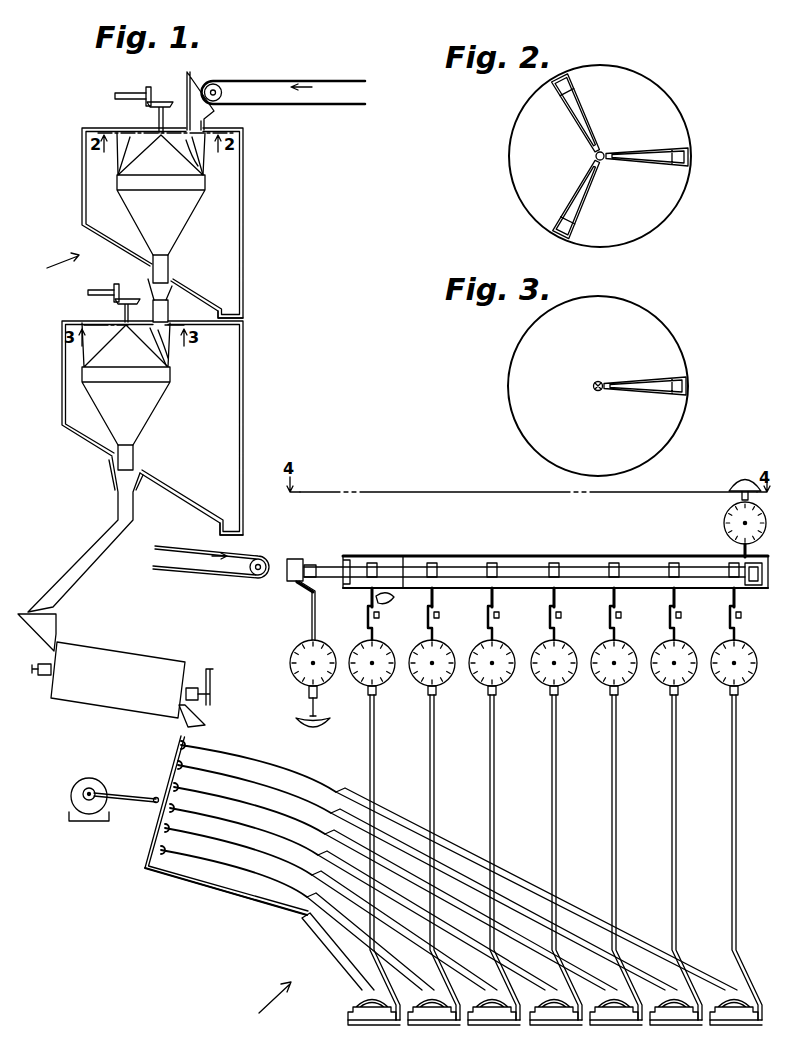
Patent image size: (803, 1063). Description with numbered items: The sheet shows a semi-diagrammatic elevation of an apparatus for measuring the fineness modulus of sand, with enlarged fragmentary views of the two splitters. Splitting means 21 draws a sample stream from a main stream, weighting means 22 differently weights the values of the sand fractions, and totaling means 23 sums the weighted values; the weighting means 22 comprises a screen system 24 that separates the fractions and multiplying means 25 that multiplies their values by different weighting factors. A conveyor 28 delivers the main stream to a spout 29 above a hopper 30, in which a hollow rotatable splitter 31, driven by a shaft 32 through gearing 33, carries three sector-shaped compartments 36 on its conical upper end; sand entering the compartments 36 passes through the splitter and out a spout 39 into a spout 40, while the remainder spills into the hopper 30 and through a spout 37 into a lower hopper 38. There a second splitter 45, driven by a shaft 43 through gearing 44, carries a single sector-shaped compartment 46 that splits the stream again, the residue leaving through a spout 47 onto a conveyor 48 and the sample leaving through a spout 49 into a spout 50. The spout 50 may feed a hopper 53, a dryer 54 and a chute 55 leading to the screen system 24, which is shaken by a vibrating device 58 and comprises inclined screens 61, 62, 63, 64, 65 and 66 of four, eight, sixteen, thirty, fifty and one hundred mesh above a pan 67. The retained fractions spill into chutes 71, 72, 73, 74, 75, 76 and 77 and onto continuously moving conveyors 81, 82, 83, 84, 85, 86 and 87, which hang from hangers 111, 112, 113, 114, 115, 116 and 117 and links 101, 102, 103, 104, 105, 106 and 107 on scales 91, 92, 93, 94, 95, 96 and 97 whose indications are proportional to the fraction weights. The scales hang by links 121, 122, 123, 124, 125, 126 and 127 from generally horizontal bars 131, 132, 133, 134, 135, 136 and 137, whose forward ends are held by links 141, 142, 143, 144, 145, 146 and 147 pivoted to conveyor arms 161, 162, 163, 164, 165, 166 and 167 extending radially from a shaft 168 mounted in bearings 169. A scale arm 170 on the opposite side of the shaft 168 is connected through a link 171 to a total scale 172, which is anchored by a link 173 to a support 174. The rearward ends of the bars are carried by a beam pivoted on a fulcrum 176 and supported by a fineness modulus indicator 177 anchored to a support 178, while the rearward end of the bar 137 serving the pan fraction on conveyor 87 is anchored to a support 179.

In FIG. 1, the splitting means 21 is at (51, 263).
In FIG. 1, the weighting means 22 is at (260, 1005).
In FIG. 1, the totaling means 23 is at (734, 506).
In FIG. 1, the screen system 24 is at (188, 909).
In FIG. 1, the multiplying means 25 is at (462, 546).
In FIG. 1, the conveyor 28 is at (316, 84).
In FIG. 1, the spout 29 is at (197, 81).
In FIG. 1, the hopper 30 is at (245, 216).
In FIG. 1, the splitter 31 is at (180, 210).
In FIG. 2, the splitter 31 is at (660, 110).
In FIG. 1, the shaft 32 is at (137, 91).
In FIG. 1, the gearing 33 is at (158, 92).
In FIG. 1, the sector-shaped compartments 36 is at (122, 156).
In FIG. 2, the sector-shaped compartments 36 is at (560, 100).
In FIG. 1, the spout 37 is at (240, 308).
In FIG. 1, the hopper 38 is at (245, 366).
In FIG. 1, the spout 39 is at (168, 270).
In FIG. 1, the spout 40 is at (168, 318).
In FIG. 1, the shaft 43 is at (108, 289).
In FIG. 1, the gearing 44 is at (126, 289).
In FIG. 1, the splitter 45 is at (150, 398).
In FIG. 3, the splitter 45 is at (665, 333).
In FIG. 1, the sector-shaped compartment 46 is at (165, 350).
In FIG. 3, the sector-shaped compartment 46 is at (676, 376).
In FIG. 1, the spout 47 is at (238, 532).
In FIG. 1, the conveyor 48 is at (170, 548).
In FIG. 1, the spout 49 is at (133, 462).
In FIG. 1, the spout 50 is at (88, 556).
In FIG. 1, the hopper 53 is at (56, 621).
In FIG. 1, the dryer 54 is at (124, 655).
In FIG. 1, the chute 55 is at (205, 718).
In FIG. 1, the vibrating device 58 is at (78, 784).
In FIG. 1, the screen 61 is at (176, 745).
In FIG. 1, the screen 62 is at (172, 765).
In FIG. 1, the screen 63 is at (168, 787).
In FIG. 1, the screen 64 is at (164, 810).
In FIG. 1, the screen 65 is at (159, 830).
In FIG. 1, the screen 66 is at (155, 852).
In FIG. 1, the pan 67 is at (152, 872).
In FIG. 1, the chute 71 is at (693, 962).
In FIG. 1, the chute 72 is at (627, 962).
In FIG. 1, the chute 73 is at (563, 962).
In FIG. 1, the chute 74 is at (508, 960).
In FIG. 1, the chute 75 is at (450, 960).
In FIG. 1, the chute 76 is at (388, 957).
In FIG. 1, the chute 77 is at (335, 961).
In FIG. 1, the conveyor 81 is at (727, 1029).
In FIG. 1, the conveyor 82 is at (667, 1029).
In FIG. 1, the conveyor 83 is at (607, 1029).
In FIG. 1, the conveyor 84 is at (547, 1029).
In FIG. 1, the conveyor 85 is at (485, 1029).
In FIG. 1, the conveyor 86 is at (425, 1029).
In FIG. 1, the conveyor 87 is at (365, 1029).
In FIG. 1, the scale 91 is at (749, 681).
In FIG. 1, the scale 92 is at (689, 681).
In FIG. 1, the scale 93 is at (629, 681).
In FIG. 1, the scale 94 is at (569, 681).
In FIG. 1, the scale 95 is at (507, 681).
In FIG. 1, the scale 96 is at (447, 681).
In FIG. 1, the scale 97 is at (387, 681).
In FIG. 1, the link 101 is at (736, 773).
In FIG. 1, the link 102 is at (676, 773).
In FIG. 1, the link 103 is at (616, 773).
In FIG. 1, the link 104 is at (556, 773).
In FIG. 1, the link 105 is at (494, 771).
In FIG. 1, the link 106 is at (434, 766).
In FIG. 1, the link 107 is at (374, 766).
In FIG. 1, the hanger 111 is at (762, 1026).
In FIG. 1, the hanger 112 is at (702, 1026).
In FIG. 1, the hanger 113 is at (642, 1026).
In FIG. 1, the hanger 114 is at (582, 1026).
In FIG. 1, the hanger 115 is at (520, 1026).
In FIG. 1, the hanger 116 is at (460, 1026).
In FIG. 1, the hanger 117 is at (400, 1026).
In FIG. 1, the link 121 is at (735, 630).
In FIG. 1, the link 122 is at (675, 630).
In FIG. 1, the link 123 is at (615, 630).
In FIG. 1, the link 124 is at (555, 630).
In FIG. 1, the link 125 is at (493, 630).
In FIG. 1, the link 126 is at (433, 630).
In FIG. 1, the link 127 is at (373, 630).
In FIG. 1, the bar 131 is at (736, 615).
In FIG. 1, the bar 132 is at (676, 615).
In FIG. 1, the bar 133 is at (616, 615).
In FIG. 1, the bar 134 is at (556, 615).
In FIG. 1, the bar 135 is at (494, 615).
In FIG. 1, the bar 136 is at (434, 615).
In FIG. 1, the bar 137 is at (370, 618).
In FIG. 1, the link 141 is at (738, 598).
In FIG. 1, the link 142 is at (678, 598).
In FIG. 1, the link 143 is at (618, 598).
In FIG. 1, the link 144 is at (558, 598).
In FIG. 1, the link 145 is at (498, 598).
In FIG. 1, the link 146 is at (438, 598).
In FIG. 1, the link 147 is at (367, 600).
In FIG. 1, the conveyor arm 161 is at (730, 564).
In FIG. 1, the conveyor arm 162 is at (670, 564).
In FIG. 1, the conveyor arm 163 is at (617, 549).
In FIG. 1, the conveyor arm 164 is at (554, 563).
In FIG. 1, the conveyor arm 165 is at (492, 563).
In FIG. 1, the conveyor arm 166 is at (432, 563).
In FIG. 1, the conveyor arm 167 is at (374, 563).
In FIG. 1, the shaft 168 is at (325, 566).
In FIG. 1, the bearings 169 is at (299, 588).
In FIG. 1, the scale arm 170 is at (301, 562).
In FIG. 1, the link 171 is at (312, 620).
In FIG. 1, the total scale 172 is at (290, 658).
In FIG. 1, the link 173 is at (309, 692).
In FIG. 1, the support 174 is at (298, 716).
In FIG. 1, the fulcrum 176 is at (380, 598).
In FIG. 1, the fineness modulus indicator 177 is at (724, 520).
In FIG. 1, the support 178 is at (746, 479).
In FIG. 1, the support 179 is at (368, 553).